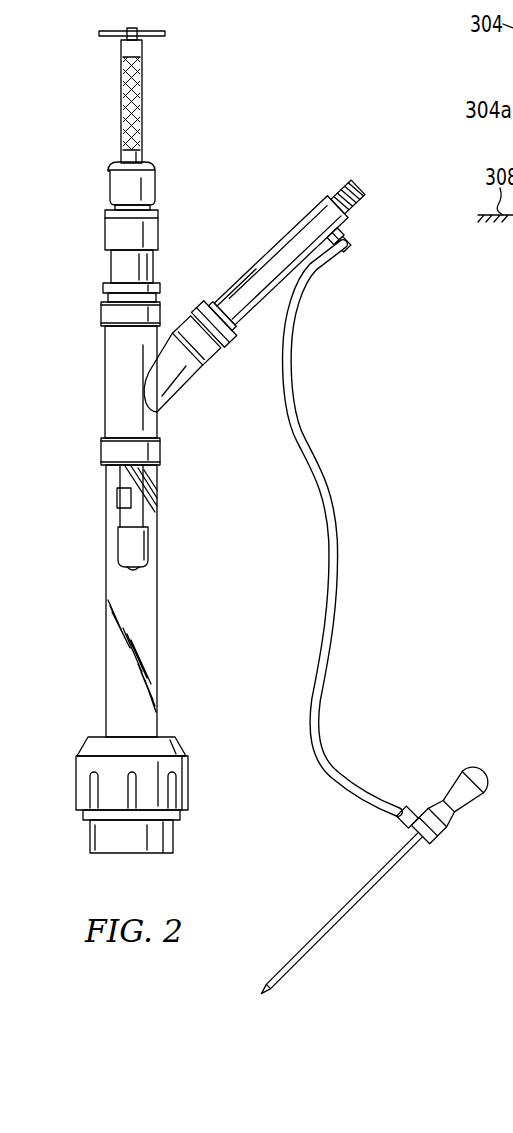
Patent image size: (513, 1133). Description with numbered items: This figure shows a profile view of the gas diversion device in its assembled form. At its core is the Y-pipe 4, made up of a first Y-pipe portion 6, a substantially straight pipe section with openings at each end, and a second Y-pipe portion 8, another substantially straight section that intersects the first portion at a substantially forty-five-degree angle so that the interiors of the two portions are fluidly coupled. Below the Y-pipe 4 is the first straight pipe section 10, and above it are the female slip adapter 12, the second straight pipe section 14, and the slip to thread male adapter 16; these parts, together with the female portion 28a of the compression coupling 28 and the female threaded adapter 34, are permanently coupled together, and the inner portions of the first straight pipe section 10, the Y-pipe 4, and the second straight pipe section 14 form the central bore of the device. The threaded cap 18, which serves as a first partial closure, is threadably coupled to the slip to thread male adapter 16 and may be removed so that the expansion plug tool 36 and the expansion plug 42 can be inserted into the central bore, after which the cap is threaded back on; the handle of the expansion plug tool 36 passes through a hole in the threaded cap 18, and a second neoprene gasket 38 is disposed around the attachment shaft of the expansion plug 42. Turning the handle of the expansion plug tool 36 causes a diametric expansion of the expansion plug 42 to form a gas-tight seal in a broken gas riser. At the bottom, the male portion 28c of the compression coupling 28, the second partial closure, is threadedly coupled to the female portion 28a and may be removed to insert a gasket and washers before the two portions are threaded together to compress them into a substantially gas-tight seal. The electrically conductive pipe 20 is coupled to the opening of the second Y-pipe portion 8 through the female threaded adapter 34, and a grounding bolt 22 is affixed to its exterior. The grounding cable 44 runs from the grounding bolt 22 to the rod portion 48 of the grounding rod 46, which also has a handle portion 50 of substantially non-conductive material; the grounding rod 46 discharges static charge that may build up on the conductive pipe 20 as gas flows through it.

The Y-pipe 4 is at (108, 383).
The first Y-pipe portion 6 is at (116, 386).
The second Y-pipe portion 8 is at (183, 378).
The first straight pipe section 10 is at (136, 601).
The female slip adapter 12 is at (105, 292).
The second straight pipe section 14 is at (111, 263).
The slip to thread male adapter 16 is at (106, 227).
The threaded cap 18 is at (110, 185).
The electrically conductive pipe 20 is at (292, 261).
The grounding bolt 22 is at (352, 253).
The compression coupling 28 is at (126, 795).
The female portion of the compression coupling 28a is at (188, 779).
The male portion of the compression coupling 28c is at (173, 827).
The female threaded adapter 34 is at (196, 306).
The expansion plug tool 36 is at (121, 100).
The second neoprene gasket 38 is at (117, 499).
The expansion plug 42 is at (118, 551).
The grounding cable 44 is at (337, 596).
The grounding rod 46 is at (381, 878).
The rod portion 48 is at (347, 917).
The handle portion 50 is at (470, 806).